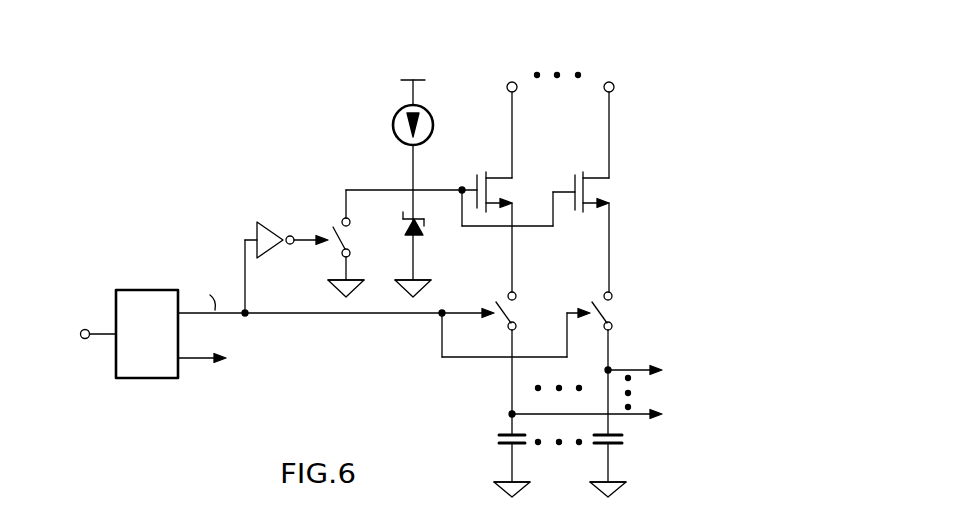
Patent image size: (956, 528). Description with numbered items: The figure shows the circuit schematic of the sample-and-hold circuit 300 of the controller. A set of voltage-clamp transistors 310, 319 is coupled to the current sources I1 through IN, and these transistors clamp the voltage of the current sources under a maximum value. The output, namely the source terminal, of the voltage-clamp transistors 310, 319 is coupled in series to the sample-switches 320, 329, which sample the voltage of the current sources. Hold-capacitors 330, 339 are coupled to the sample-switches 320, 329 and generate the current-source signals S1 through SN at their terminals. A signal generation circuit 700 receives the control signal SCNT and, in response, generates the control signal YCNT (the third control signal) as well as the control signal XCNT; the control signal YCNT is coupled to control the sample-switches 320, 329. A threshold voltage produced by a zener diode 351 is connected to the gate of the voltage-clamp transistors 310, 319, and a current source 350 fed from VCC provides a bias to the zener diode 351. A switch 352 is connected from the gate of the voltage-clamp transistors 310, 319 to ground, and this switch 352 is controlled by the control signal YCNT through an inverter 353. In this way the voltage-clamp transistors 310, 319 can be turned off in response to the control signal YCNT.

The sample-and-hold circuit 300 is at (663, 35).
The voltage-clamp transistor 310 is at (496, 170).
The voltage-clamp transistor 319 is at (612, 190).
The sample-switch 320 is at (518, 312).
The sample-switch 329 is at (614, 312).
The hold-capacitor 330 is at (492, 440).
The hold-capacitor 339 is at (626, 440).
The current source 350 is at (388, 118).
The zener diode 351 is at (426, 232).
The switch 352 is at (356, 229).
The inverter 353 is at (278, 222).
The signal generation circuit 700 is at (147, 290).